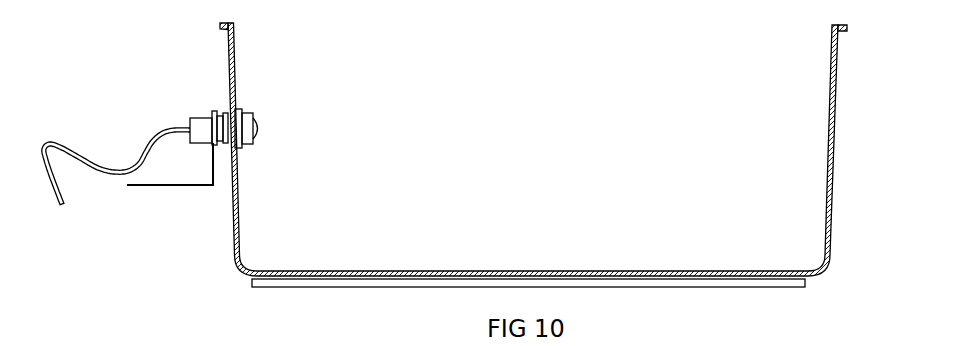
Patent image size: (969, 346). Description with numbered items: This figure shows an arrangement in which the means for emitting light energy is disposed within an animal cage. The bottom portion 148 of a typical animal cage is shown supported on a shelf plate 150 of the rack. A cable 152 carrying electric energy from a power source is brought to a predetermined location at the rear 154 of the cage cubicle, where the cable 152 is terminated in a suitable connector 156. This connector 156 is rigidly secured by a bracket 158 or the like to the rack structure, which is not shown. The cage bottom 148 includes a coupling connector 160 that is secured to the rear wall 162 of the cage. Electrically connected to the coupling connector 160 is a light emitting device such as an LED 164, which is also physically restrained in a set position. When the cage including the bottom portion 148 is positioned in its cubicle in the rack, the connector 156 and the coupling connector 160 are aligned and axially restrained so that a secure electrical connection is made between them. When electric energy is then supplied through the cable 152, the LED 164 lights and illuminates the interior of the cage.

The bottom portion 148 is at (237, 227).
The shelf plate 150 is at (252, 287).
The cable 152 is at (111, 166).
The rear of cage cubicle 154 is at (200, 100).
The connector 156 is at (199, 138).
The bracket 158 is at (192, 186).
The coupling connector 160 is at (231, 112).
The rear wall 162 is at (236, 60).
The LED 164 is at (258, 143).